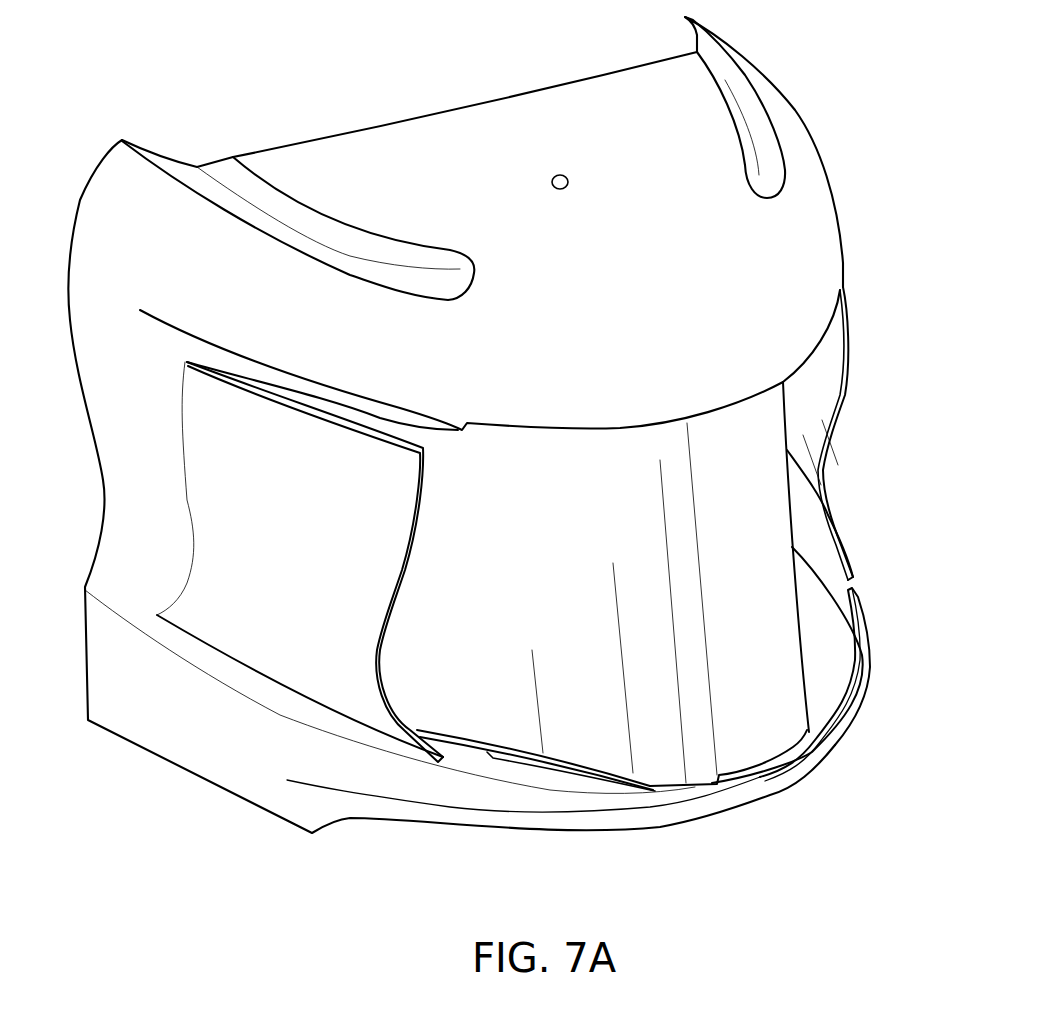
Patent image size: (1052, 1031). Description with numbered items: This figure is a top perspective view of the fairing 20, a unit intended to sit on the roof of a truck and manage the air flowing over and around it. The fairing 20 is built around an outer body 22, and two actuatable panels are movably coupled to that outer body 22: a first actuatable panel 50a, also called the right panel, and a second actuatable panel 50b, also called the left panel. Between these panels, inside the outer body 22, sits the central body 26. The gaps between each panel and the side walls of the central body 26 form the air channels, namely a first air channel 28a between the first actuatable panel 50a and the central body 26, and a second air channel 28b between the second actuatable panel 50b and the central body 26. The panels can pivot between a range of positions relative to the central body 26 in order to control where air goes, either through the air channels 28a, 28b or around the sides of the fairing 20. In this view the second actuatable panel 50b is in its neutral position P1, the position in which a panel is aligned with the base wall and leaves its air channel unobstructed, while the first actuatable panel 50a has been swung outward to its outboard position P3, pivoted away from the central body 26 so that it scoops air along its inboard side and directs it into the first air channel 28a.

The fairing 20 is at (145, 60).
The outer body 22 is at (103, 198).
The central body 26 is at (748, 607).
The first actuatable panel 50a is at (300, 551).
The second actuatable panel 50b is at (837, 436).
The first air channel 28a is at (417, 690).
The second air channel 28b is at (830, 627).
The neutral position P1 is at (837, 500).
The outboard position P3 is at (233, 633).